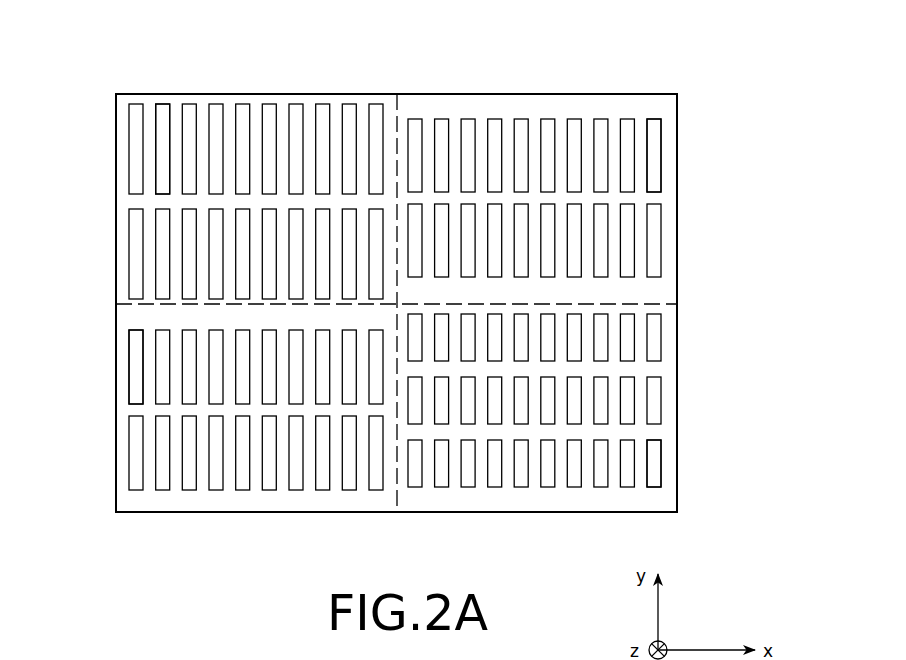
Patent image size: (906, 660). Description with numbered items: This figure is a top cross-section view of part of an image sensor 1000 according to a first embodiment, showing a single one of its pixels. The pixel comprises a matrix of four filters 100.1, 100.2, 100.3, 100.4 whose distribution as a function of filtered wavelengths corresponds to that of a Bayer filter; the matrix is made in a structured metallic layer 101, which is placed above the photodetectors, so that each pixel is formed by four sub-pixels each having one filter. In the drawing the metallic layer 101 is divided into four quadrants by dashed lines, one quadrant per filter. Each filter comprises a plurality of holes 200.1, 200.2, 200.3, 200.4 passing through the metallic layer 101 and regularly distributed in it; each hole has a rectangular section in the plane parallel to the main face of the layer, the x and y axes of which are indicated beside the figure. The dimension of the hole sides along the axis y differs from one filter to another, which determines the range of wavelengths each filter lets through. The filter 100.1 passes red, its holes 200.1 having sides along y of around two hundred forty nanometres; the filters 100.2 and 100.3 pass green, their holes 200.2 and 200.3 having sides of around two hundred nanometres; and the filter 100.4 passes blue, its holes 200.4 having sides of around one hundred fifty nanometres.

The image sensor 1000 is at (394, 265).
The structured metallic layer 101 is at (679, 262).
The filter 100.1 is at (202, 162).
The filter 100.2 is at (198, 429).
The filter 100.3 is at (591, 198).
The filter 100.4 is at (592, 398).
The holes 200.1 is at (162, 118).
The holes 200.2 is at (138, 364).
The holes 200.3 is at (652, 140).
The holes 200.4 is at (655, 466).